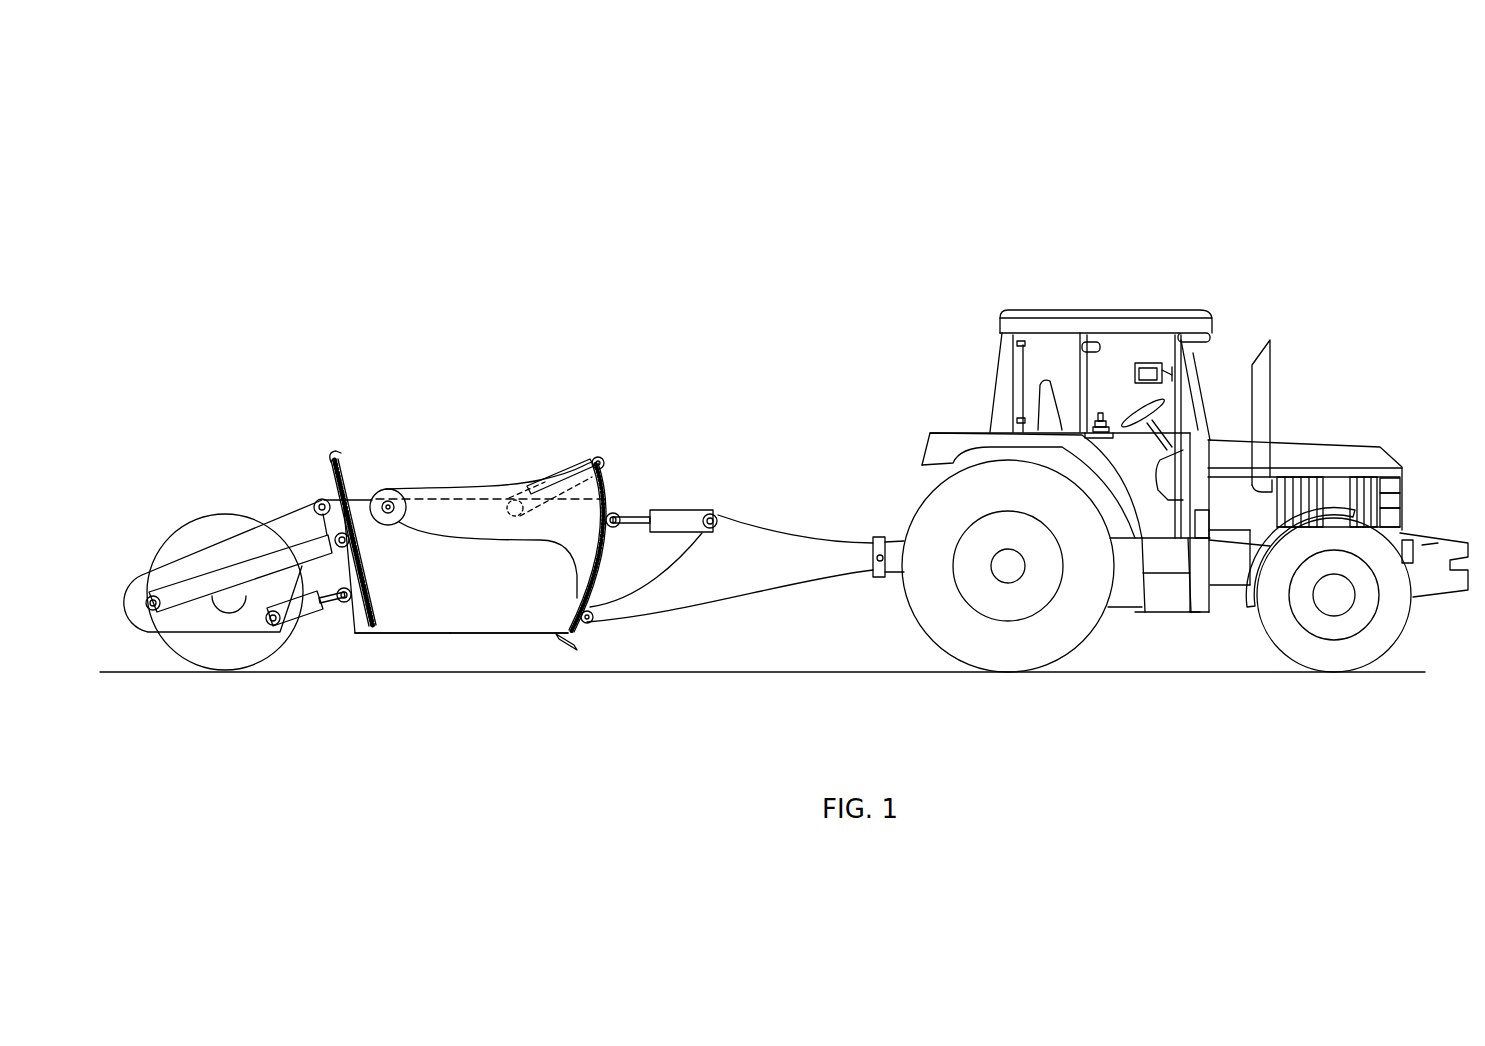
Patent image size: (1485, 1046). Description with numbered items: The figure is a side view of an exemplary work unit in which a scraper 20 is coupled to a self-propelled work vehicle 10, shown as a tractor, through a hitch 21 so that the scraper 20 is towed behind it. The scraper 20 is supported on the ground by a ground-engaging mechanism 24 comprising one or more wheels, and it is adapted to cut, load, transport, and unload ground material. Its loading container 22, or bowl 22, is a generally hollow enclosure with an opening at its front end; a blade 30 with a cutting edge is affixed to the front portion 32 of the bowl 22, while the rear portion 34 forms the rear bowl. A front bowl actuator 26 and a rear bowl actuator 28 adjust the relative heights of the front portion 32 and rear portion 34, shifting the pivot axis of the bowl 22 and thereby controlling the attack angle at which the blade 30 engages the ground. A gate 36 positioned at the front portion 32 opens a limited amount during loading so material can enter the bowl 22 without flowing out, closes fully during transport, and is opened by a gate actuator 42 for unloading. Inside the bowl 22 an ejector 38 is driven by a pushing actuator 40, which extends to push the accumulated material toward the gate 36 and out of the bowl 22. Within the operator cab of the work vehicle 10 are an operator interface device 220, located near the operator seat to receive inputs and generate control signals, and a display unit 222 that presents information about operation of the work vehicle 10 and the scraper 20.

The work vehicle 10 is at (1195, 192).
The scraper 20 is at (567, 283).
The hitch 21 is at (773, 555).
The loading container 22 is at (467, 577).
The ground-engaging mechanism 24 is at (192, 652).
The front bowl actuator 26 is at (683, 517).
The rear bowl actuator 28 is at (285, 628).
The blade 30 is at (565, 648).
The front portion 32 is at (545, 642).
The rear portion 34 is at (373, 643).
The gate 36 is at (617, 475).
The ejector 38 is at (330, 452).
The pushing actuator 40 is at (223, 583).
The gate actuator 42 is at (561, 465).
The operator interface device 220 is at (1099, 412).
The display unit 222 is at (1143, 352).